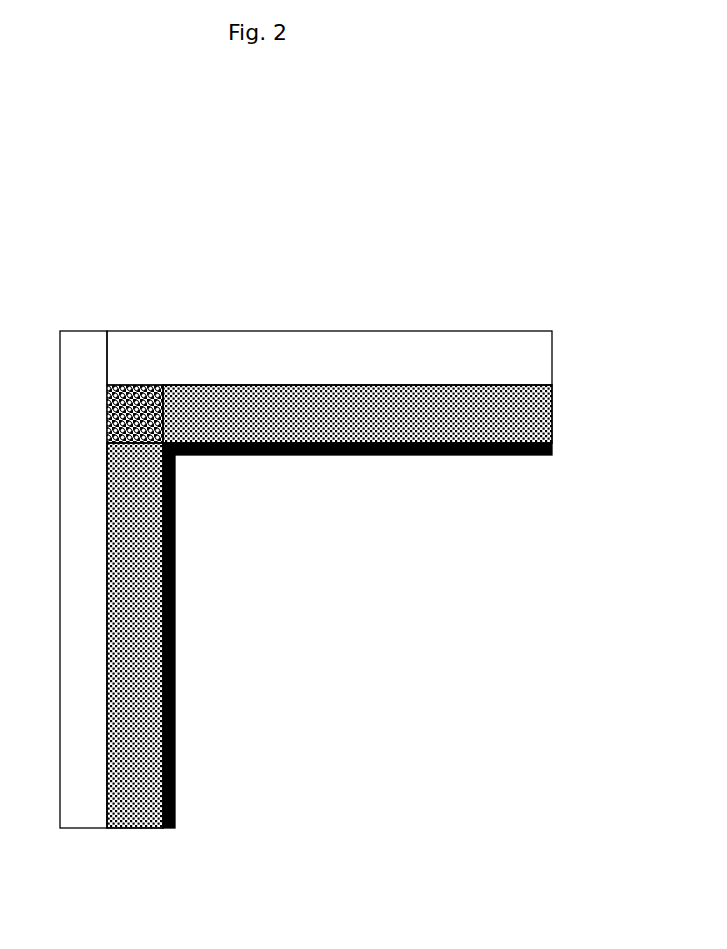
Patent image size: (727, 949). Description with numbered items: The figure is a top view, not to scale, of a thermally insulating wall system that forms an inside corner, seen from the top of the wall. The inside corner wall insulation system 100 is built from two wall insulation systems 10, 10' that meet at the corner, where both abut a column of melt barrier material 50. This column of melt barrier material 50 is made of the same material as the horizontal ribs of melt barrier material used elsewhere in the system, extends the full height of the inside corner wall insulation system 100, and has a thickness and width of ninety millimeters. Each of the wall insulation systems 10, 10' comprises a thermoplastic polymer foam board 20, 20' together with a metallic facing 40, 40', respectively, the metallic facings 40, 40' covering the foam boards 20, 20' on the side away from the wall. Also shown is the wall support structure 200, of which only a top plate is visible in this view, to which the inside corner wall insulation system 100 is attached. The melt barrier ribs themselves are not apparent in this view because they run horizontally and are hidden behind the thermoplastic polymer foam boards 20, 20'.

The inside corner wall insulation system 100 is at (72, 268).
The wall support structure 200 is at (379, 373).
The wall insulation system 10 is at (406, 375).
The thermoplastic polymer foam board 20 is at (358, 480).
The metallic facing 40 is at (357, 486).
The column of melt barrier material 50 is at (177, 455).
The wall insulation system 10' is at (202, 635).
The thermoplastic polymer foam board 20' is at (178, 635).
The metallic facing 40' is at (226, 635).